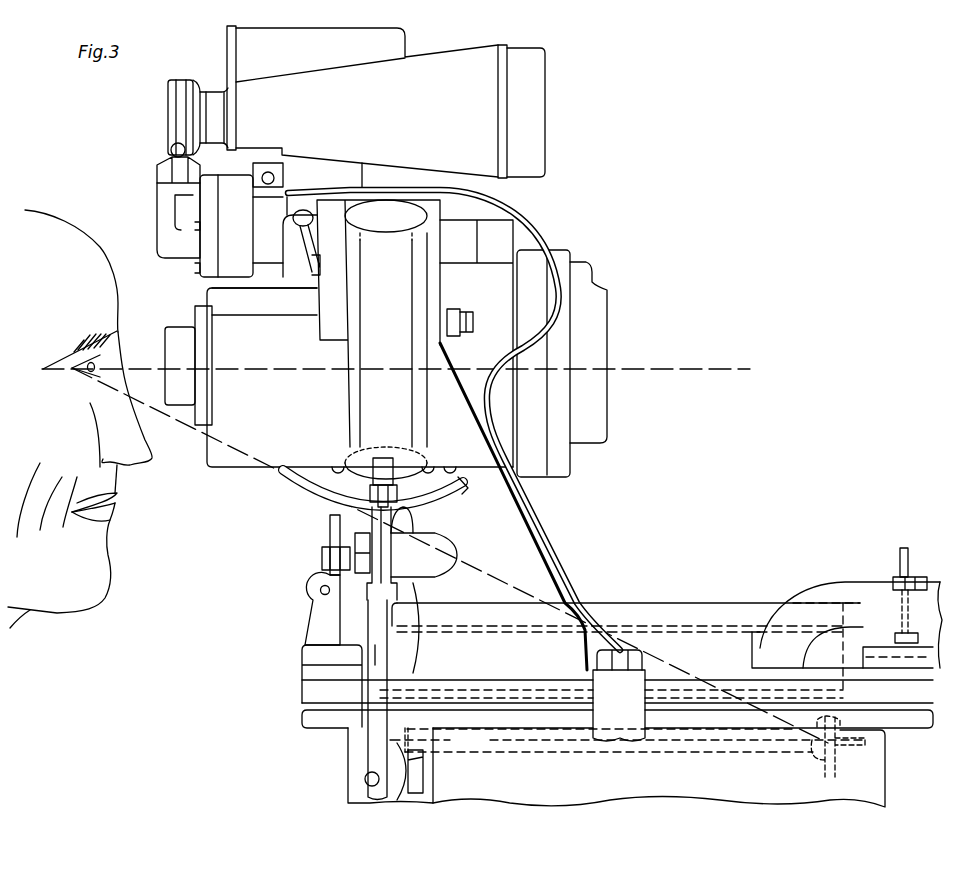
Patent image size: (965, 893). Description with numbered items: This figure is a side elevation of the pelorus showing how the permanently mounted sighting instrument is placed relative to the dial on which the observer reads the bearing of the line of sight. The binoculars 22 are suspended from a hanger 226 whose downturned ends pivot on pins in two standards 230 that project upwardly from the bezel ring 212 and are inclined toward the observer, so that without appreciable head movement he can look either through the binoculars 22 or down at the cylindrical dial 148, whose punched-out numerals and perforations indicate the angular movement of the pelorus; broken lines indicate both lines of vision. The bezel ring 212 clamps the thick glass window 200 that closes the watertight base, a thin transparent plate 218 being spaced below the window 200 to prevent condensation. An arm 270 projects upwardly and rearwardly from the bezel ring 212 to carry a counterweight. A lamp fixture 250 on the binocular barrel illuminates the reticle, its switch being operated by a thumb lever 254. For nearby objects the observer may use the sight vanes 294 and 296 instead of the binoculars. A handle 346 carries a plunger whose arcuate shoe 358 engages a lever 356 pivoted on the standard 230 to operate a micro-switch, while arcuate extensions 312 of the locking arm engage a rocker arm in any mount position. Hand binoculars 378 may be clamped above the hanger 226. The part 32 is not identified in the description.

The binoculars 22 is at (600, 313).
The base 32 is at (616, 767).
The cylindrical dial 148 is at (405, 740).
The glass window 200 is at (673, 628).
The bezel ring 212 is at (745, 612).
The transparent plate 218 is at (503, 697).
The hanger 226 is at (423, 260).
The standards 230 is at (481, 521).
The fixture 250 is at (235, 268).
The thumb lever 254 is at (307, 270).
The arm 270 is at (820, 593).
The sight vane 294 is at (330, 527).
The sight vane 296 is at (900, 548).
The arcuate extensions 312 is at (303, 480).
The handle 346 is at (378, 339).
The lever 356 is at (389, 535).
The arcuate shoe 358 is at (452, 490).
The hand binoculars 378 is at (356, 102).